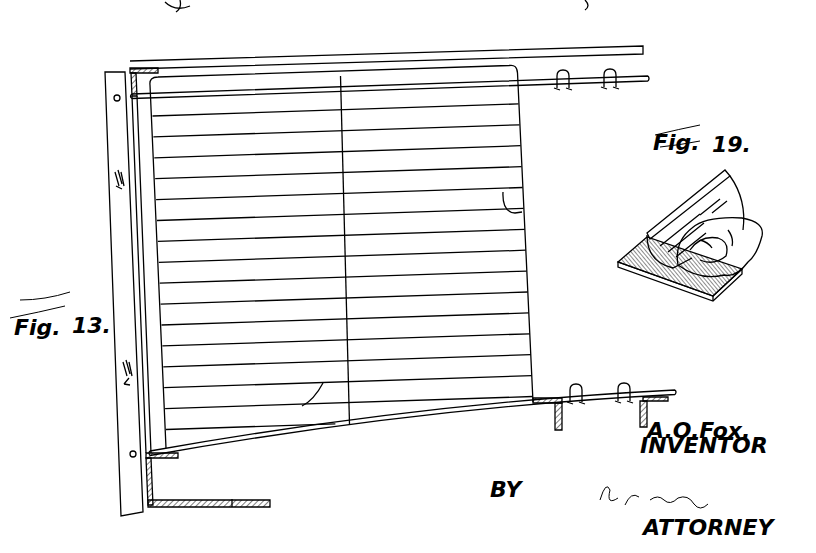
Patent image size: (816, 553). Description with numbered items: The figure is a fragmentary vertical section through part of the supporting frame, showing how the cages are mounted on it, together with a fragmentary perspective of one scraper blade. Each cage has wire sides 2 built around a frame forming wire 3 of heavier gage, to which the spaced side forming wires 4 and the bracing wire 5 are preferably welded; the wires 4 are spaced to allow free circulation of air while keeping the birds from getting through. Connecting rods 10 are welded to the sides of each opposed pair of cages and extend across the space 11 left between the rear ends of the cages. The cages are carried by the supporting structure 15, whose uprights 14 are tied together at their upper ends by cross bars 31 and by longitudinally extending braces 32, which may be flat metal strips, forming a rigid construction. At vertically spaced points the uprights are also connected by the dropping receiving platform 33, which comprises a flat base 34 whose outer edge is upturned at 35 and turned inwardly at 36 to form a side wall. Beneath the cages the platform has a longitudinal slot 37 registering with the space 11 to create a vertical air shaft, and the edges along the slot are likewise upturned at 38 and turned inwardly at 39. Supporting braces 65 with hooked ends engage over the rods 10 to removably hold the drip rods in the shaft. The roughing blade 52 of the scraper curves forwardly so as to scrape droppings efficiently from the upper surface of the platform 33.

In FIG. 13, the sides 2 is at (448, 67).
In FIG. 13, the frame forming wire 3 is at (160, 214).
In FIG. 13, the side forming wires 4 is at (522, 212).
In FIG. 13, the bracing wire 5 is at (348, 186).
In FIG. 13, the connecting rods 10 is at (540, 82).
In FIG. 13, the space 11 is at (550, 306).
In FIG. 13, the uprights 14 is at (117, 145).
In FIG. 13, the supporting structure 15 is at (118, 386).
In FIG. 13, the cross bars 31 is at (310, 55).
In FIG. 13, the longitudinally extending braces 32 is at (167, 56).
In FIG. 13, the dropping receiving platform 33 is at (245, 489).
In FIG. 19, the dropping receiving platform 33 is at (690, 287).
In FIG. 13, the flat base 34 is at (202, 507).
In FIG. 19, the flat base 34 is at (660, 281).
In FIG. 13, the upturned outer edge 35 is at (153, 485).
In FIG. 13, the inturned portion 36 is at (178, 456).
In FIG. 13, the slots 37 is at (563, 420).
In FIG. 13, the upturned slot edge 38 is at (557, 418).
In FIG. 13, the inturned slot edge 39 is at (541, 404).
In FIG. 19, the roughing blade 52 is at (687, 206).
In FIG. 13, the supporting braces 65 is at (610, 92).